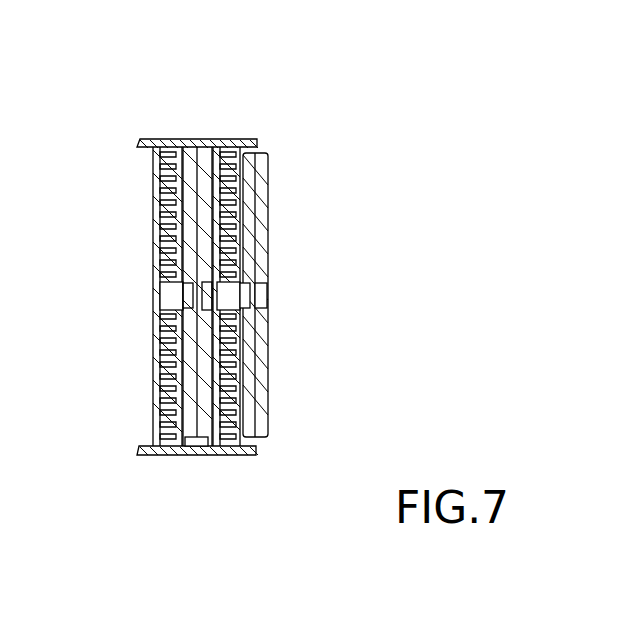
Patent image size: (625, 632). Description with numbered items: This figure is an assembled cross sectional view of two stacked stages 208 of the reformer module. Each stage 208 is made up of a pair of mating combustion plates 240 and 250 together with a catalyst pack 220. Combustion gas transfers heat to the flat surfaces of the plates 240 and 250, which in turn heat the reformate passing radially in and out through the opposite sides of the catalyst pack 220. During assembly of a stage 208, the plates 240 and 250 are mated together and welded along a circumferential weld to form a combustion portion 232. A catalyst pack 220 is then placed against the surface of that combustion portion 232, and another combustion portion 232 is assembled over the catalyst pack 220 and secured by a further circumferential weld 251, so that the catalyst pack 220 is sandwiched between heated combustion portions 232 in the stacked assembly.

The stage 208 is at (179, 128).
The catalyst pack 220 is at (270, 383).
The combustion portion 232 is at (160, 139).
The combustion plate 240 is at (153, 455).
The combustion plate 250 is at (186, 455).
The circumferential weld 251 is at (195, 138).